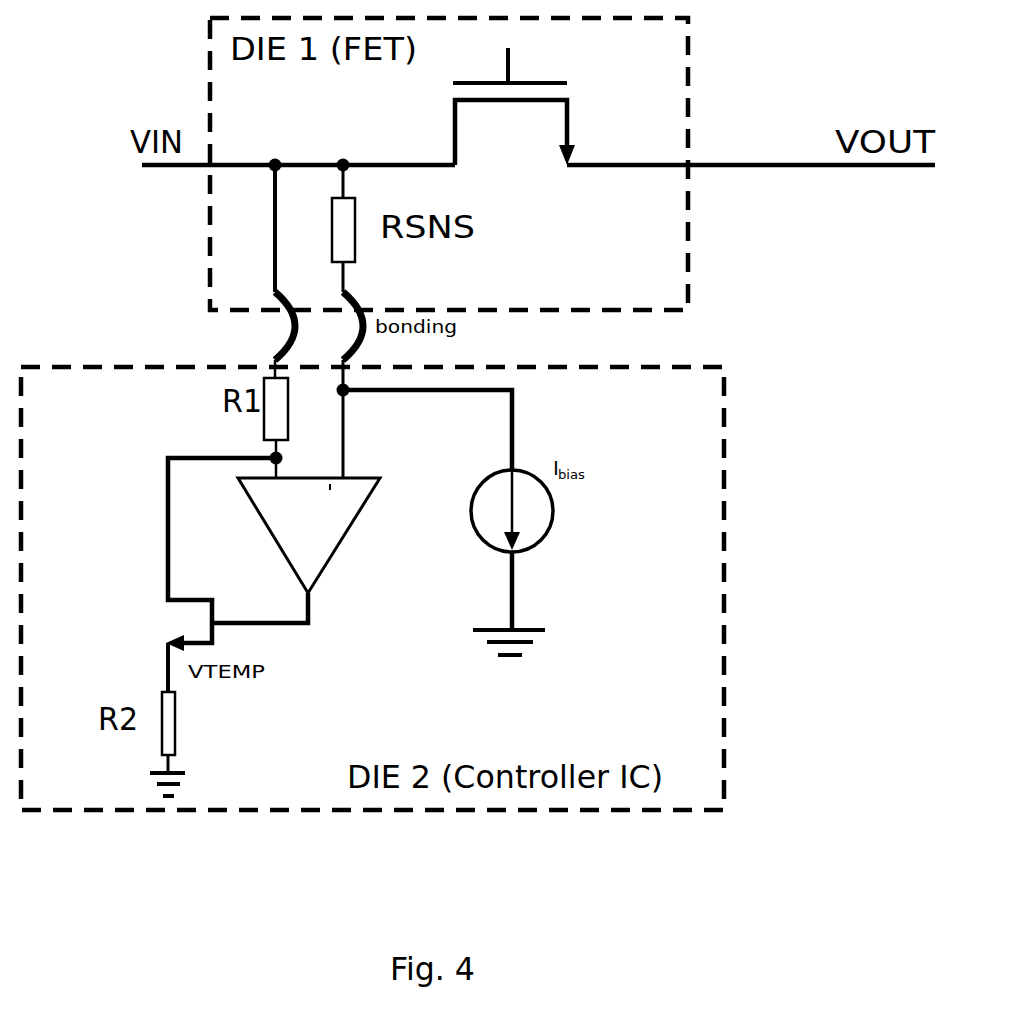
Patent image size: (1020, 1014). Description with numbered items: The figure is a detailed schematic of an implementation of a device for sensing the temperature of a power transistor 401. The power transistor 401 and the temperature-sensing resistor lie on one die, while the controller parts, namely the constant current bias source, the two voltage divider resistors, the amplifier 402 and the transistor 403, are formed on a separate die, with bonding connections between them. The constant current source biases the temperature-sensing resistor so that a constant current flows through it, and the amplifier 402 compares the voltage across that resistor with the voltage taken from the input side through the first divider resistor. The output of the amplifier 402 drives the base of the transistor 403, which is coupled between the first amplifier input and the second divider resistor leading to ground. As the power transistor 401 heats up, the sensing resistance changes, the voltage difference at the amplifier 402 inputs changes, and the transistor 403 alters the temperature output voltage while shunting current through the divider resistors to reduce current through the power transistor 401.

The power transistor 401 is at (569, 100).
The amplifier 402 is at (325, 532).
The transistor 403 is at (196, 598).